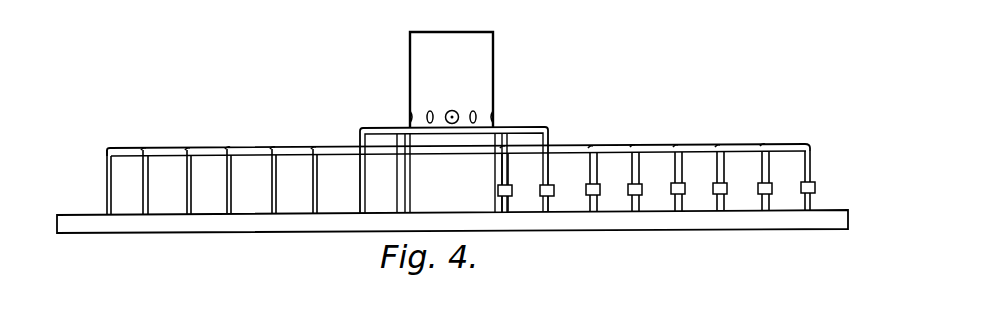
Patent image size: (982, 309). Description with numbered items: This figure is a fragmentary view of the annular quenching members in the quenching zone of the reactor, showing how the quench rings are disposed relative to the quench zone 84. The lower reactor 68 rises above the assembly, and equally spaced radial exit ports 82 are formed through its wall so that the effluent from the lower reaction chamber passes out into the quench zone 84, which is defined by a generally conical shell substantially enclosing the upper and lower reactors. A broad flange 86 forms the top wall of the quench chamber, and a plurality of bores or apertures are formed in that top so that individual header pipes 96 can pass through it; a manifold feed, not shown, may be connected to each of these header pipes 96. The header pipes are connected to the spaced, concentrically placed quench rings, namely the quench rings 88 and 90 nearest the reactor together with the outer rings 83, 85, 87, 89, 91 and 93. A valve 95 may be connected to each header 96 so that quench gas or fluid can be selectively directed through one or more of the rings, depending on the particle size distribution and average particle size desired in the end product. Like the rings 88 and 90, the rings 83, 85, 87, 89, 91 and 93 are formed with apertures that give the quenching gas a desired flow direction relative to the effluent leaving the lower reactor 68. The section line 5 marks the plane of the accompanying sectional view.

The section line 5- 5 is at (287, 30).
The lower reactor 68 is at (495, 70).
The radial exit ports 82 is at (412, 112).
The quench ring 83 is at (316, 148).
The quench zone 84 is at (643, 83).
The quench ring 85 is at (275, 148).
The broad flange 86 is at (205, 227).
The quench ring 87 is at (230, 148).
The quench ring 88 is at (403, 126).
The quench ring 89 is at (190, 148).
The quench ring 90 is at (360, 126).
The quench ring 91 is at (146, 148).
The quench ring 93 is at (108, 148).
The valve 95 is at (815, 185).
The header pipes 96 is at (105, 180).